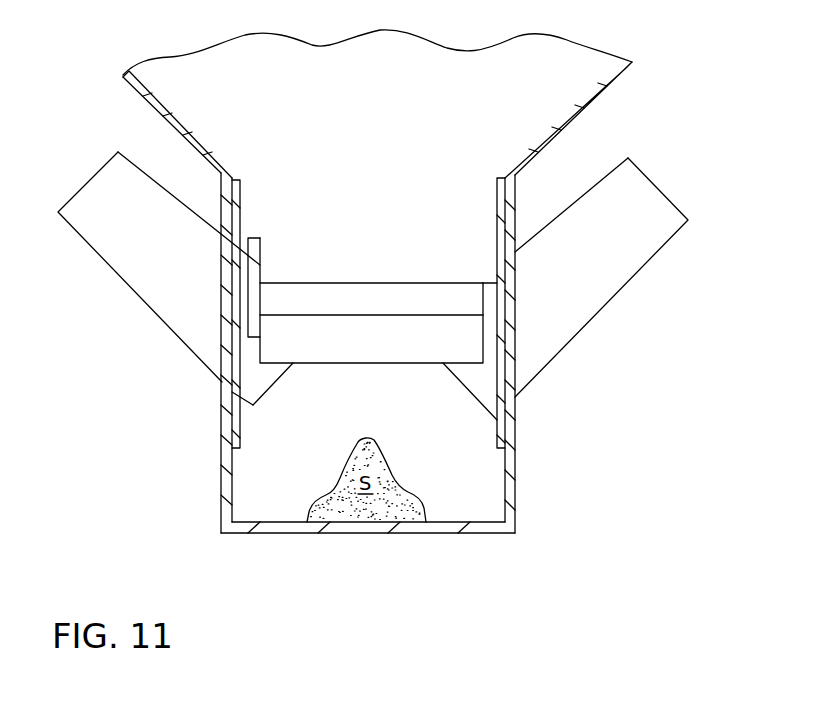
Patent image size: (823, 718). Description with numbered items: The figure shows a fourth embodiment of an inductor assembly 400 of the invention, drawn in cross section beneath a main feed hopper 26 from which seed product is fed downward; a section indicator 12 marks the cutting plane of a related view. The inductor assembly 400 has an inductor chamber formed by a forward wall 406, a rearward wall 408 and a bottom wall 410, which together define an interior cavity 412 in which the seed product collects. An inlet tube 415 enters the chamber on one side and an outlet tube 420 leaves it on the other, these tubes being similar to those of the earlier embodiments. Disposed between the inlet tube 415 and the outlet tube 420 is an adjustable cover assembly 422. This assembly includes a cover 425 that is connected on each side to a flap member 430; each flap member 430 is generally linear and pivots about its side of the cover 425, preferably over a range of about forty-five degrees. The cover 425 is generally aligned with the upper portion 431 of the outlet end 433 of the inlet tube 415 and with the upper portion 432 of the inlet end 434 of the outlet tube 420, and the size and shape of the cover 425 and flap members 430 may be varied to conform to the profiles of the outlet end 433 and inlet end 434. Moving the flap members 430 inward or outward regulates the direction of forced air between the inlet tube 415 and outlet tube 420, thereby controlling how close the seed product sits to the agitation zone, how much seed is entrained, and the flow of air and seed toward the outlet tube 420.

The section line 12- 12 is at (260, 157).
The main feed hopper 26 is at (613, 87).
The inductor assembly 400 is at (602, 150).
The forward wall 406 is at (221, 493).
The rearward wall 408 is at (515, 484).
The bottom wall 410 is at (360, 534).
The interior cavity 412 is at (443, 462).
The inlet tube 415 is at (137, 301).
The outlet tube 420 is at (587, 333).
The adjustable cover assembly 422 is at (370, 283).
The cover 425 is at (322, 298).
The flap member 430 is at (345, 350).
The upper portion of outlet end of inlet tube 431 is at (255, 270).
The upper portion of inlet end of outlet tube 432 is at (492, 280).
The outlet end of inlet tube 433 is at (277, 388).
The inlet end of outlet tube 434 is at (462, 392).